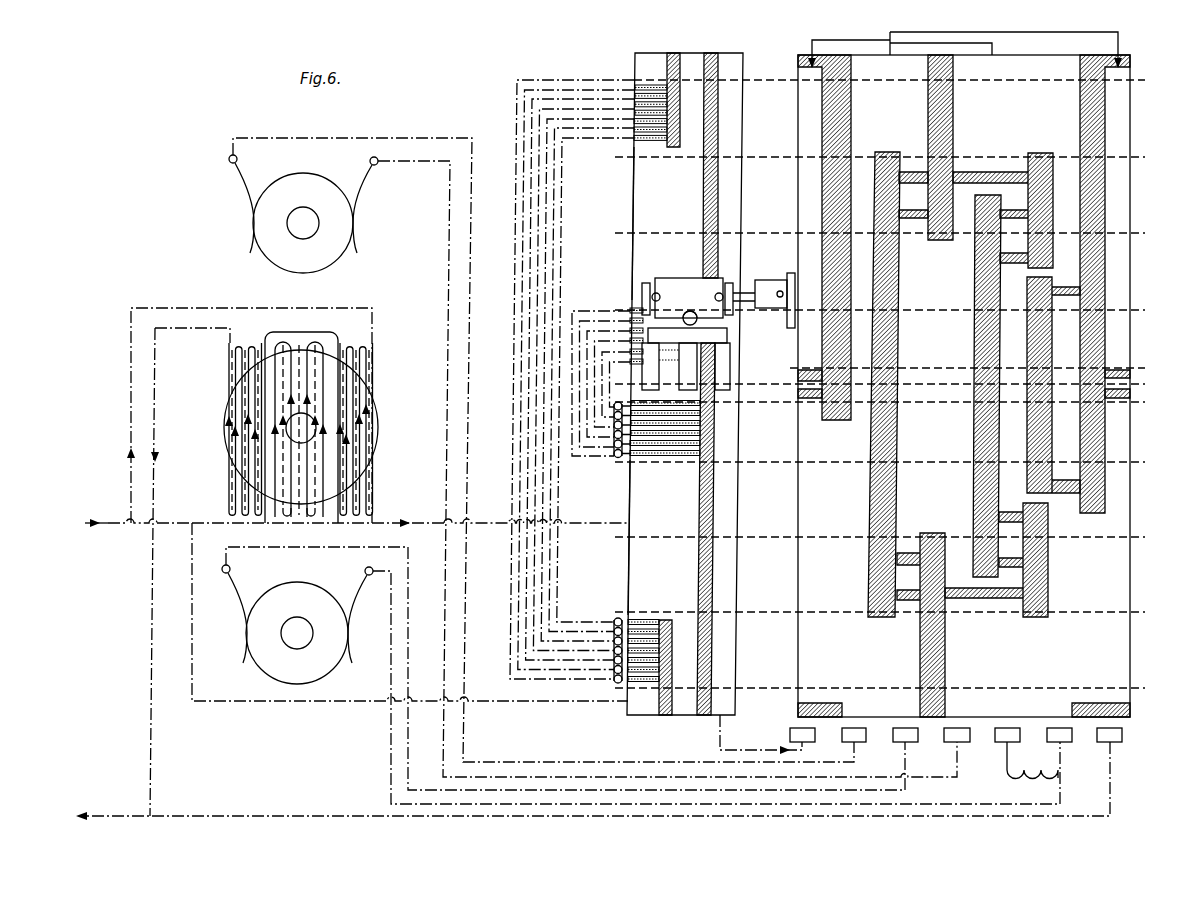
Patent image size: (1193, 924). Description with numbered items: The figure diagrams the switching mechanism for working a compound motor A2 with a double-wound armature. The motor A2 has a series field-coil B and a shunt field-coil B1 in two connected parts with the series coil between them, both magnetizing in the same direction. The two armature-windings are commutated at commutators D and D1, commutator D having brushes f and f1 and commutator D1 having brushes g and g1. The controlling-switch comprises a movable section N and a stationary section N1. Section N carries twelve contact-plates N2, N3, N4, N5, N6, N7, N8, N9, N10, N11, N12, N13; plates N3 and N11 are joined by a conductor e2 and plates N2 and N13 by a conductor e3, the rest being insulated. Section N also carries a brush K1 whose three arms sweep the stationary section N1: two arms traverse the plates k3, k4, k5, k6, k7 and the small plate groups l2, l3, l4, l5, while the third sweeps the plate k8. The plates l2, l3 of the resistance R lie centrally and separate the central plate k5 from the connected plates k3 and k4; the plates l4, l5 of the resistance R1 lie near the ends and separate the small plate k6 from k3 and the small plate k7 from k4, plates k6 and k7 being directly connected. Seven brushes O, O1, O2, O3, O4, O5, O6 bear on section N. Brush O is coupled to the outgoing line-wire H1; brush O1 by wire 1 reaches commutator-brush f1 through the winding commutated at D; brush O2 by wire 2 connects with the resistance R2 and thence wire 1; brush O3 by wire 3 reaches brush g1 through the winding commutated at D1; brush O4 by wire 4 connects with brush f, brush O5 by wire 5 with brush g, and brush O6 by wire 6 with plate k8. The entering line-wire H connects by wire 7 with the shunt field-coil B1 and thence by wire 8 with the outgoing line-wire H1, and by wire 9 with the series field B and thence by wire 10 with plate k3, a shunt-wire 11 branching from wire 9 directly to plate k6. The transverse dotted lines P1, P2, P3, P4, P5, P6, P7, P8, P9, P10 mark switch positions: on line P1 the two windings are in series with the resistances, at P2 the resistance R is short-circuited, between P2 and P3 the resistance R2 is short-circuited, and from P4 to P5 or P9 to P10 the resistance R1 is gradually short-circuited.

The entering line-wire H is at (343, 514).
The outgoing line-wire H1 is at (593, 781).
The wire 7 is at (245, 404).
The wire 8 is at (190, 572).
The wire 9 is at (174, 514).
The wire 10 is at (408, 514).
The shunt-wire 11 is at (410, 622).
The wire 5 is at (543, 450).
The wire 3 is at (667, 469).
The wire 4 is at (573, 671).
The wire 1 is at (716, 687).
The wire 2 is at (1001, 757).
The wire 6 is at (761, 734).
The commutator D1 is at (303, 223).
The commutator-brush g is at (241, 204).
The commutator-brush g1 is at (365, 205).
The commutator D is at (297, 633).
The commutator-brush f is at (234, 614).
The commutator-brush f1 is at (360, 615).
The compound motor A2 is at (286, 427).
The series field-coil B is at (301, 435).
The shunt field-coil B1 is at (299, 414).
The stationary switch-section N1 is at (685, 371).
The switch-plate k7 is at (657, 100).
The switch-plate k4 is at (649, 223).
The switch-plate k3 is at (650, 537).
The switch-plate k8 is at (715, 384).
The small switch-plate k6 is at (656, 667).
The central switch-plate k5 is at (665, 420).
The group of small plates l5 is at (645, 130).
The group of small plates l4 is at (637, 624).
The group of small plates l3 is at (633, 316).
The group of small plates l2 is at (640, 450).
The resistance R is at (603, 440).
The resistance R1 is at (602, 643).
The resistance R2 is at (1032, 784).
The brush K1 is at (718, 331).
The switch-position line P10 is at (903, 81).
The switch-position line P9 is at (890, 148).
The switch-position line P8 is at (889, 224).
The switch-position line P7 is at (889, 301).
The switch-position line P6 is at (975, 358).
The switch-position line P1 is at (892, 399).
The switch-position line P2 is at (889, 465).
The switch-position line P3 is at (889, 545).
The switch-position line P4 is at (890, 617).
The switch-position line P5 is at (890, 692).
The movable switch-section N is at (968, 136).
The conductor e2 is at (1014, 50).
The conductor e3 is at (849, 46).
The contact-plate N13 is at (824, 237).
The contact-plate N12 is at (798, 376).
The contact-plate N2 is at (964, 386).
The contact-plate N10 is at (898, 384).
The contact-plate N11 is at (964, 603).
The contact-plate N8 is at (961, 386).
The contact-plate N7 is at (1003, 210).
The contact-plate N3 is at (1105, 284).
The isolated contact-plate N5 is at (1053, 385).
The contact-plate N4 is at (1130, 384).
The small isolated contact-plate N6 is at (996, 560).
The contact-plate N9 is at (921, 625).
The brush O is at (1116, 746).
The brush O1 is at (1068, 746).
The brush O2 is at (1015, 743).
The brush O3 is at (963, 744).
The brush O4 is at (911, 745).
The brush O5 is at (862, 744).
The brush O6 is at (811, 743).